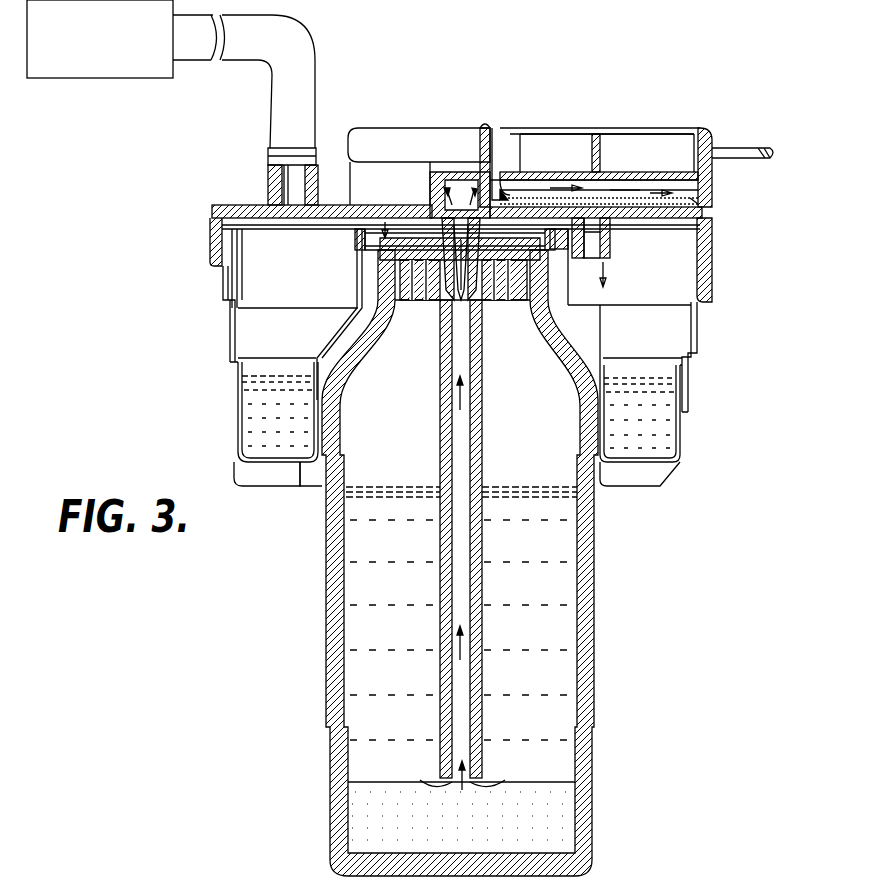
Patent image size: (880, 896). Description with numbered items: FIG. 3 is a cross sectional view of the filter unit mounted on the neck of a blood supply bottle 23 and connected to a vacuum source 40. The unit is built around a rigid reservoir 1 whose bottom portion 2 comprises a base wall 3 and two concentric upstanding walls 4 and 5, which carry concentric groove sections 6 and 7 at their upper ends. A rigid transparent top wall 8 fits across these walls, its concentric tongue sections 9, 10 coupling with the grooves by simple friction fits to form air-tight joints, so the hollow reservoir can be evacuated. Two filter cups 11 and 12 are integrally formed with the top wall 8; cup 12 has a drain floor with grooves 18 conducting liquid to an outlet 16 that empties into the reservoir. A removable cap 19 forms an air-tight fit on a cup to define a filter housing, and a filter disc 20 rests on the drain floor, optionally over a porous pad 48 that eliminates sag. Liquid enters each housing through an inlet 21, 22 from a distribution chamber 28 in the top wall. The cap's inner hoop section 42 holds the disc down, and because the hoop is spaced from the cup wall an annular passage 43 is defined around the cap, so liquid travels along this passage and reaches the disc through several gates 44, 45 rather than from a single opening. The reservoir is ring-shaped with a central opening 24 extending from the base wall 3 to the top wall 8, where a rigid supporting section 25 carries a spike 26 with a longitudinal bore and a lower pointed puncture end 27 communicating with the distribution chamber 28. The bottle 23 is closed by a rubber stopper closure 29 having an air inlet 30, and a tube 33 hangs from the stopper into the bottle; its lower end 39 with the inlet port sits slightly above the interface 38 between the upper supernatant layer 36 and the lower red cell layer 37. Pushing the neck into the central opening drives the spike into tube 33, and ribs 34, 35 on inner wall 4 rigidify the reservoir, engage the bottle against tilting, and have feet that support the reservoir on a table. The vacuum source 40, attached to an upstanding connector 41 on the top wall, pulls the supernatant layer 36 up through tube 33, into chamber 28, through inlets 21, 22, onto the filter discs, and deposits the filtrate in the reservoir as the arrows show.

The rigid reservoir 1 is at (706, 314).
The bottom portion 2 is at (236, 382).
The base wall 3 is at (266, 466).
The inner upstanding wall 4 is at (335, 338).
The outer upstanding wall 5 is at (228, 330).
The groove section 6 is at (355, 250).
The groove section 7 is at (214, 258).
The top wall 8 is at (214, 205).
The tongue section 9 is at (210, 238).
The tongue section 10 is at (355, 236).
The filter cup 11 is at (345, 178).
The filter cup 12 is at (700, 183).
The outlet 16 is at (600, 205).
The grooves 18 is at (608, 258).
The removable cap 19 is at (706, 122).
The filter disc 20 is at (652, 205).
The liquid inlet 21 is at (472, 170).
The liquid inlet 22 is at (500, 182).
The blood supply bottle 23 is at (322, 655).
The central opening 24 is at (575, 345).
The supporting section 25 is at (408, 200).
The spike 26 is at (432, 302).
The pointed puncture end 27 is at (470, 310).
The distribution chamber 28 is at (442, 172).
The rubber stopper closure 29 is at (386, 222).
The air inlet 30 is at (480, 290).
The tube 33 is at (480, 466).
The rib 34 is at (300, 478).
The rib 35 is at (610, 470).
The supernatant layer 36 is at (545, 565).
The red cell layer 37 is at (570, 826).
The interface 38 is at (555, 785).
The lower end 39 is at (424, 778).
The vacuum source 40 is at (105, 79).
The upstanding connector 41 is at (272, 155).
The inner hoop section 42 is at (508, 196).
The annular passage 43 is at (700, 203).
The gate 44 is at (548, 192).
The gate 45 is at (672, 205).
The porous pad 48 is at (676, 200).